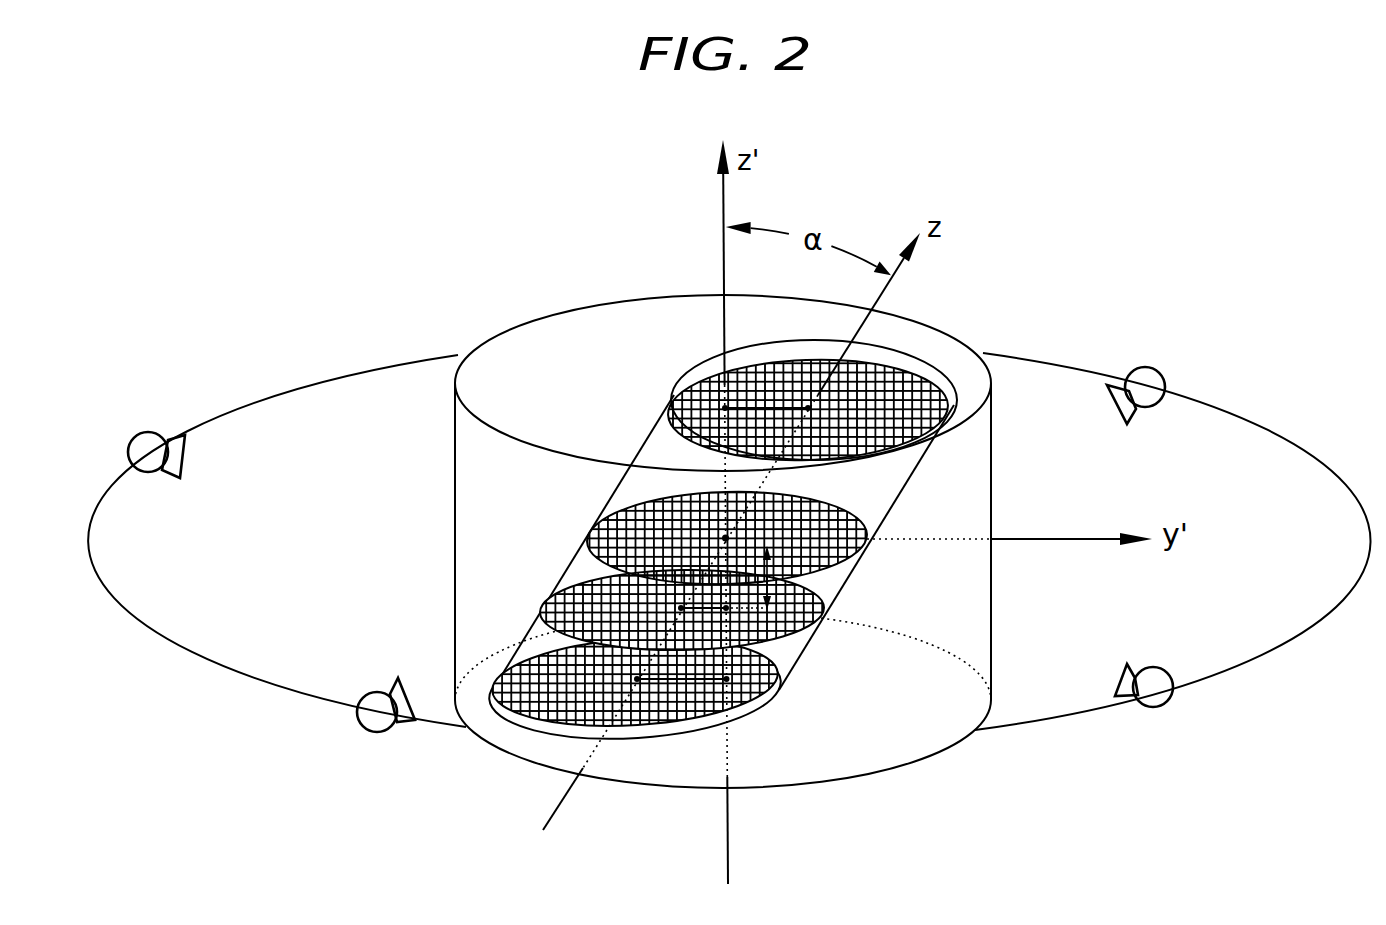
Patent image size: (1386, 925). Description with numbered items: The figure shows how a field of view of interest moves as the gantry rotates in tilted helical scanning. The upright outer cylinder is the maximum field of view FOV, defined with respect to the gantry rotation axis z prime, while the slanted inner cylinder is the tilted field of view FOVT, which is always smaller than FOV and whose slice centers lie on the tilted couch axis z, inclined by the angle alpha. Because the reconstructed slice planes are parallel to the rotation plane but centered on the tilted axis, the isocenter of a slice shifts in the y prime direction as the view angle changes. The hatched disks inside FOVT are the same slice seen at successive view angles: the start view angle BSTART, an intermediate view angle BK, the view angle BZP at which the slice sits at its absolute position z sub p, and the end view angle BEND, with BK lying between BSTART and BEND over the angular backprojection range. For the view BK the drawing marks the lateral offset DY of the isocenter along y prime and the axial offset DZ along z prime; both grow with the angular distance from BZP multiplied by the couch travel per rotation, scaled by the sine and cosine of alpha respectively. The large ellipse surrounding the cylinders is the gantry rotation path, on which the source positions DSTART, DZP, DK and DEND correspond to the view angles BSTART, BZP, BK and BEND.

The maximum field of view FOV is at (527, 323).
The tilted field of view FOVT is at (923, 360).
The start view angle BSTART is at (635, 685).
The view angle k BK is at (685, 610).
The view angle corresponding to slice position zp BZP is at (730, 540).
The end view angle BEND is at (810, 410).
The axial isocenter displacement Δz'(βk) DZ is at (792, 578).
The lateral isocenter displacement Δy'(βk) DY is at (703, 613).
The source position at end view angle DEND is at (146, 425).
The source position at start view angle DSTART is at (372, 730).
The source position at view angle for zp DZP is at (1156, 368).
The source position at view angle k DK is at (1145, 719).